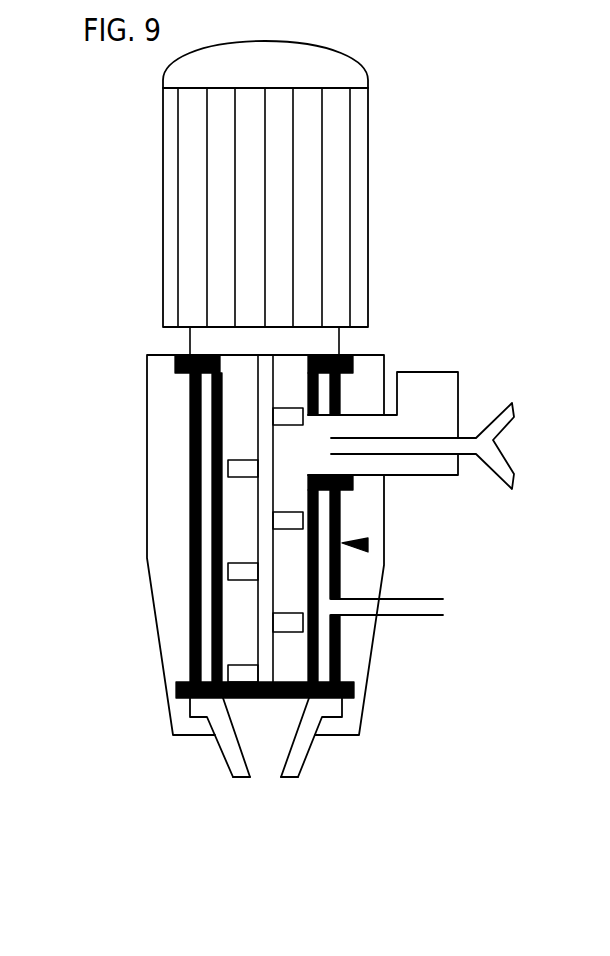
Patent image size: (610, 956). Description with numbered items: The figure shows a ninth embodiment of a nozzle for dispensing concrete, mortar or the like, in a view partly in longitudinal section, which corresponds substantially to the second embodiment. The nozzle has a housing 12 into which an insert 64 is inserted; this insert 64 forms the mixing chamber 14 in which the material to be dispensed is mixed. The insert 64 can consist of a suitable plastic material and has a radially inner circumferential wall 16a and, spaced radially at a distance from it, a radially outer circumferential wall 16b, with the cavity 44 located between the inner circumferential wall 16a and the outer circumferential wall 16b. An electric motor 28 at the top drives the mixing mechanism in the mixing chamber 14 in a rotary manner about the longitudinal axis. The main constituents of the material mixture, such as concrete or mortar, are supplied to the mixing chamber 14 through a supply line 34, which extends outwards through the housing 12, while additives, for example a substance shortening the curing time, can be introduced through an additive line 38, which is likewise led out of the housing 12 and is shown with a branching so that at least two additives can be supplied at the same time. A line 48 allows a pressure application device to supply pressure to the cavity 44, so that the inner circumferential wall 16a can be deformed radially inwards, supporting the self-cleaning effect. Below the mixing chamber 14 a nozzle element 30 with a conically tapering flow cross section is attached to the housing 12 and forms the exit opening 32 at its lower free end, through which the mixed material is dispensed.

The housing 12 is at (163, 390).
The mixing chamber 14 is at (237, 407).
The radially inner circumferential wall 16a is at (217, 473).
The radially outer circumferential wall 16b is at (195, 556).
The electric motor 28 is at (337, 200).
The nozzle element 30 is at (232, 745).
The exit opening 32 is at (272, 776).
The supply line 34 is at (417, 383).
The additive line 38 is at (477, 433).
The cavity 44 is at (208, 632).
The line 48 is at (427, 608).
The insert 64 is at (368, 545).